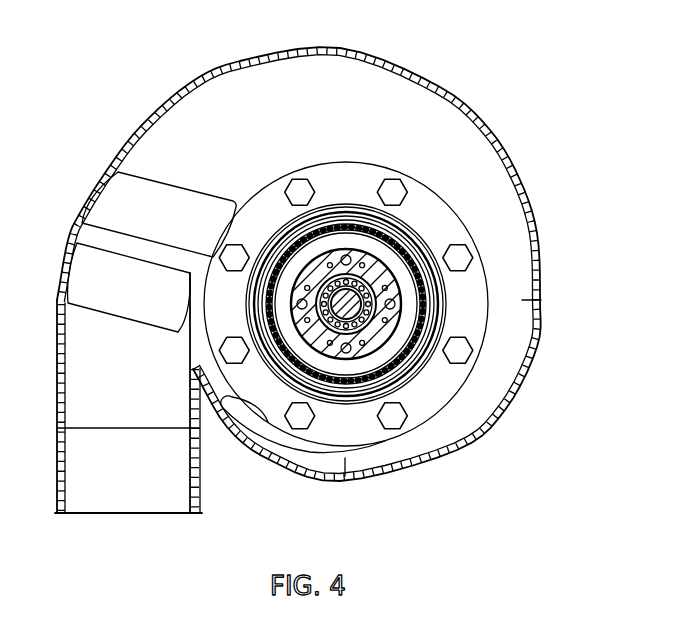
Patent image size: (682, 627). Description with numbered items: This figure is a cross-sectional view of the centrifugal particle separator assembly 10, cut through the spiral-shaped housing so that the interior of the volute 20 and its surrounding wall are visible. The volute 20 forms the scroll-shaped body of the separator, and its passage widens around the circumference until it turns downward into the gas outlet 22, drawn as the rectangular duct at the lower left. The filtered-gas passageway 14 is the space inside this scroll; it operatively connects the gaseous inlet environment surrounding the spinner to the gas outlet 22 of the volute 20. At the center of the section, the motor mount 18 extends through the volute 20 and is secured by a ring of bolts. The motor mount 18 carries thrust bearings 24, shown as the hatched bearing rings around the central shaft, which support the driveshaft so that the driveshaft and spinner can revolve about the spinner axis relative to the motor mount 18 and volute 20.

The centrifugal particle separator assembly 10 is at (543, 47).
The filtered-gas passageway 14 is at (229, 126).
The motor mount 18 is at (388, 288).
The volute 20 is at (387, 85).
The gas outlet 22 is at (127, 514).
The thrust bearings 24 is at (325, 340).